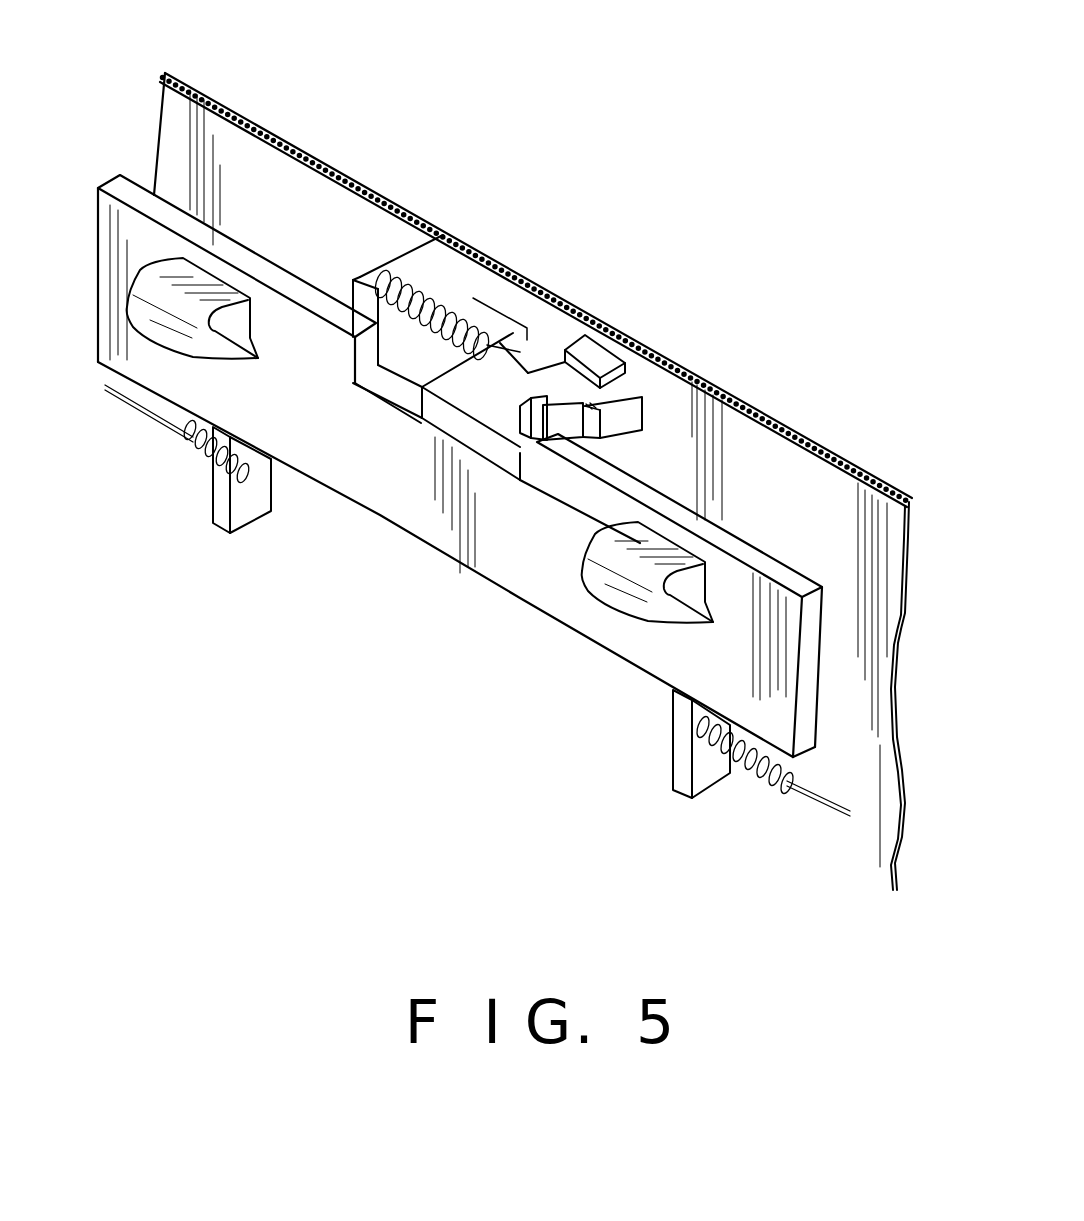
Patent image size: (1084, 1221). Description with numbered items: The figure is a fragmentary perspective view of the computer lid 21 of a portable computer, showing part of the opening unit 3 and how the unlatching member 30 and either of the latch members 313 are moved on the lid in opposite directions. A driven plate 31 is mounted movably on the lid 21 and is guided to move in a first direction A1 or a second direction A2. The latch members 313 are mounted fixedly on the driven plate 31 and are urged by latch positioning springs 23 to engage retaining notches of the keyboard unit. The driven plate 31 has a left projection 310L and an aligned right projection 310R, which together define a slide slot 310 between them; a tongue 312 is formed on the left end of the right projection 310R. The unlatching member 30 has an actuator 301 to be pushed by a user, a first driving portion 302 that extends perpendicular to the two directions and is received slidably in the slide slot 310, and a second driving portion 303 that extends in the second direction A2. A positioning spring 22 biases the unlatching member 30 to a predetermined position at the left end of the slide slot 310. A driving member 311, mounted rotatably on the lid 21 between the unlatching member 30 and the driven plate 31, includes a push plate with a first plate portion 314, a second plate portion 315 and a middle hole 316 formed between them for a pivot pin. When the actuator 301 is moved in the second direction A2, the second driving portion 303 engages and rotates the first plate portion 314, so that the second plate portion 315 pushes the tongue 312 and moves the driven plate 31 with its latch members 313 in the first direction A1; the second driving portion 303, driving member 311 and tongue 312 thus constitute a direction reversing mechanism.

The opening unit 3 is at (512, 670).
The computer lid 21 is at (948, 883).
The positioning spring 22 is at (428, 330).
The latch positioning springs 23 is at (197, 457).
The unlatching member 30 is at (530, 377).
The driven plate 31 is at (353, 113).
The actuator 301 is at (515, 313).
The first driving portion 302 is at (414, 420).
The second driving portion 303 is at (593, 357).
The slide slot 310 is at (530, 377).
The left projection 310L is at (292, 290).
The right projection 310R is at (562, 508).
The driving member 311 is at (713, 477).
The tongue 312 is at (527, 403).
The latch members 313 is at (192, 320).
The first plate portion 314 is at (622, 417).
The second plate portion 315 is at (578, 437).
The middle hole 316 is at (612, 412).
The first direction A1 is at (267, 618).
The second direction A2 is at (513, 315).